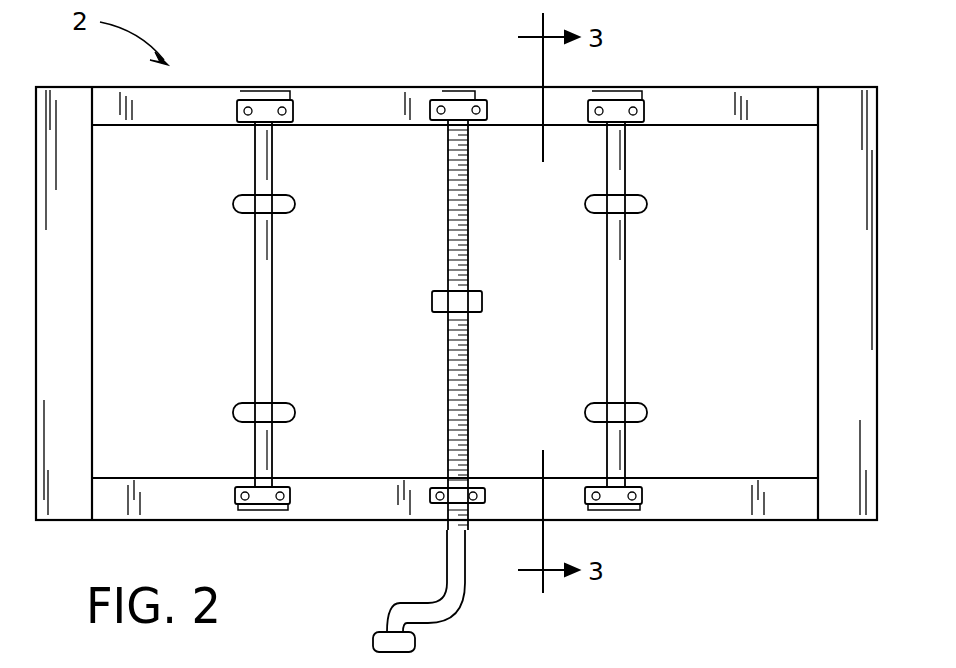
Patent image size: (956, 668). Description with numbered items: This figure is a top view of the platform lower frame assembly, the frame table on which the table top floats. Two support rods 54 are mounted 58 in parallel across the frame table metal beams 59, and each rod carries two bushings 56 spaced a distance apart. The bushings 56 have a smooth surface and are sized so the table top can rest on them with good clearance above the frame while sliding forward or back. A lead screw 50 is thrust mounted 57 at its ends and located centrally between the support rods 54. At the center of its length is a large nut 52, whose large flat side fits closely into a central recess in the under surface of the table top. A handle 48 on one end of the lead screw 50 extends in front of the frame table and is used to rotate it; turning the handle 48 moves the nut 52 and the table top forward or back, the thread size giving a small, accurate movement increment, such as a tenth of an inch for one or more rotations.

The handle 48 is at (445, 592).
The lead screw 50 is at (448, 256).
The nut 52 is at (437, 303).
The support rods 54 is at (253, 318).
The bushings 56 is at (233, 203).
The thrust mounting 57 is at (462, 93).
The mounting 58 is at (268, 97).
The frame table metal beams 59 is at (752, 93).